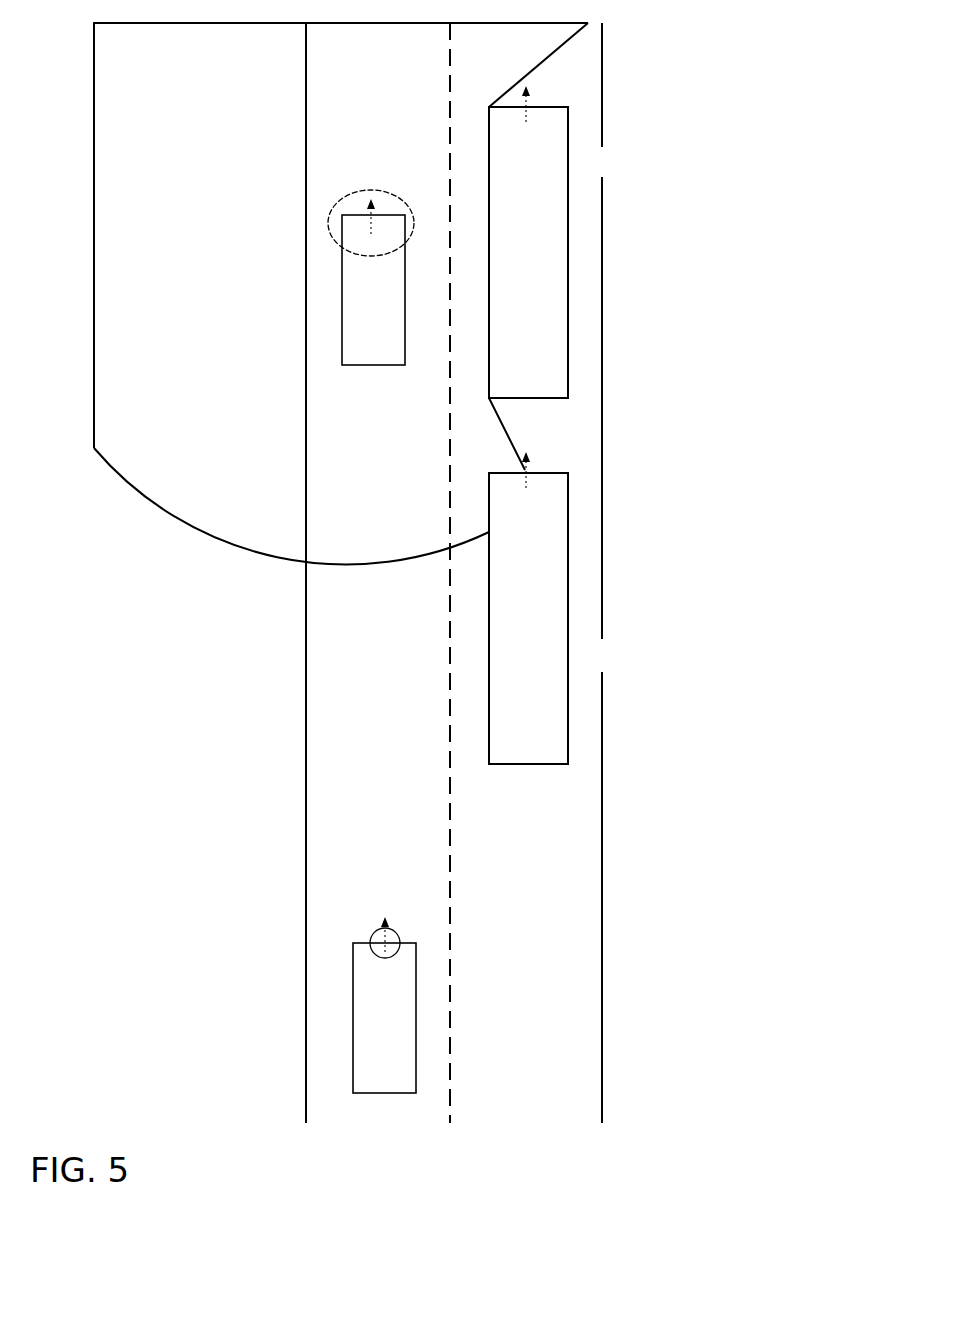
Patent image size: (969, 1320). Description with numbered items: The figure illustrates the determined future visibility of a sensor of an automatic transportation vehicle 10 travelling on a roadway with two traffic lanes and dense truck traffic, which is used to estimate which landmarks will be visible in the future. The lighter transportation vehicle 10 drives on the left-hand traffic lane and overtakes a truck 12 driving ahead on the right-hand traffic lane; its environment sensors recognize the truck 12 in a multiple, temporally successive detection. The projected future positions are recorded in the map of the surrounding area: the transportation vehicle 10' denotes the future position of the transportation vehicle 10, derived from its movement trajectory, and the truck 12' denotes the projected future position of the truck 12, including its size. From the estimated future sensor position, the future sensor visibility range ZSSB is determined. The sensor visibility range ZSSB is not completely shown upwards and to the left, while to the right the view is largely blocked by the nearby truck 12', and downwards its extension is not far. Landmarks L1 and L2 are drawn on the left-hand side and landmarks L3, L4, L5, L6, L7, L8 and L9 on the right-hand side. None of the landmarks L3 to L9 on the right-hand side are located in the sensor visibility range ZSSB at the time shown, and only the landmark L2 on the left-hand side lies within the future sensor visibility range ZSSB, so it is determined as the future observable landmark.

The transportation vehicle 10 is at (432, 1005).
The projected future position of the transportation vehicle 10' is at (371, 307).
The truck 12 is at (576, 608).
The projected future position of the truck 12' is at (579, 242).
The future sensor visibility range ZSSB is at (546, 57).
The landmark L1 is at (378, 936).
The landmark L2 is at (368, 226).
The landmark L3 is at (402, 946).
The landmark L4 is at (402, 940).
The landmark L5 is at (398, 933).
The landmark L6 is at (722, 572).
The landmark L7 is at (722, 458).
The landmark L8 is at (722, 343).
The landmark L9 is at (722, 258).